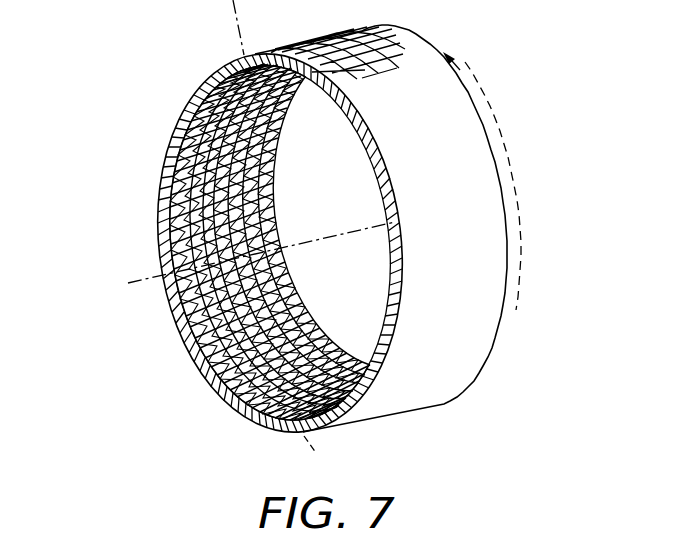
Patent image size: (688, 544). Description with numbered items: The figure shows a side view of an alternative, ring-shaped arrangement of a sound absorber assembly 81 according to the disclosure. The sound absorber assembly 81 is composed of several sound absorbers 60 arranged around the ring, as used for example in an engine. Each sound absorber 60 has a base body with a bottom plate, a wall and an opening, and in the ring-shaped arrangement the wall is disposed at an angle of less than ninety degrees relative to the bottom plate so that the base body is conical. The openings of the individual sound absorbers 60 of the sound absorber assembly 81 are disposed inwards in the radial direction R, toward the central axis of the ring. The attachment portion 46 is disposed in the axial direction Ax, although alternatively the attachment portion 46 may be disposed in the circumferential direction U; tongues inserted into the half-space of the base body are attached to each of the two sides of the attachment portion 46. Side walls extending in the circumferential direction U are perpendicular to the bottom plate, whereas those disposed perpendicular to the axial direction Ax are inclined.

The sound absorber assembly 81 is at (166, 39).
The attachment portion 46 is at (158, 147).
The sound absorber 60 is at (184, 350).
The axial direction Ax is at (246, 260).
The radial direction R is at (284, 236).
The circumferential direction U is at (508, 162).